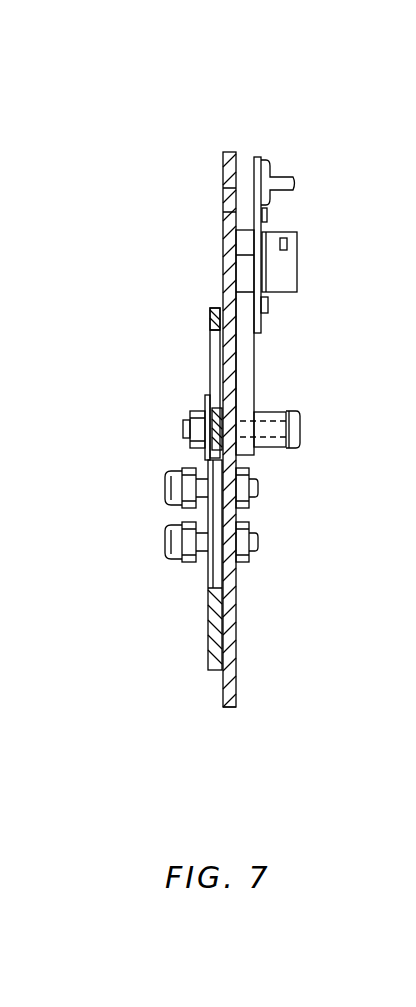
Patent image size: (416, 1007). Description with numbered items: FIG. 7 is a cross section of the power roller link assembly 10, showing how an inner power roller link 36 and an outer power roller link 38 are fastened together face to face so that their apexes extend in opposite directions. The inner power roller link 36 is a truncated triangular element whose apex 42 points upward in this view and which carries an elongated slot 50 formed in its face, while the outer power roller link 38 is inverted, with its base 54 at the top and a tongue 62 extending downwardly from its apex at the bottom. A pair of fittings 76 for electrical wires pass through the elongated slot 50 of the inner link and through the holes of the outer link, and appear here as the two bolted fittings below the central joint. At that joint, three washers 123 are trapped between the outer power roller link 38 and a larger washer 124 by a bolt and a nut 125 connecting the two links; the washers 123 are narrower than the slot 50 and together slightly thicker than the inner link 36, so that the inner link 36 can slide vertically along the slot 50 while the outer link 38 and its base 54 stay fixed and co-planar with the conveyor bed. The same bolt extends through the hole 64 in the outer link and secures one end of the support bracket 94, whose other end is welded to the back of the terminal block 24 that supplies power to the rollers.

The mounting assembly 10 is at (284, 430).
The terminal block 24 is at (260, 157).
The inner power roller link 36 is at (208, 613).
The outer power roller link 38 is at (236, 625).
The apex 42 is at (212, 310).
The elongated slot 50 is at (213, 342).
The base 54 is at (228, 152).
The tongue 62 is at (234, 707).
The hole 64 is at (250, 410).
The fittings for electrical wires 76 is at (167, 492).
The support bracket 94 is at (247, 347).
The washers 123 is at (215, 398).
The washer 124 is at (205, 405).
The nut 125 is at (183, 430).